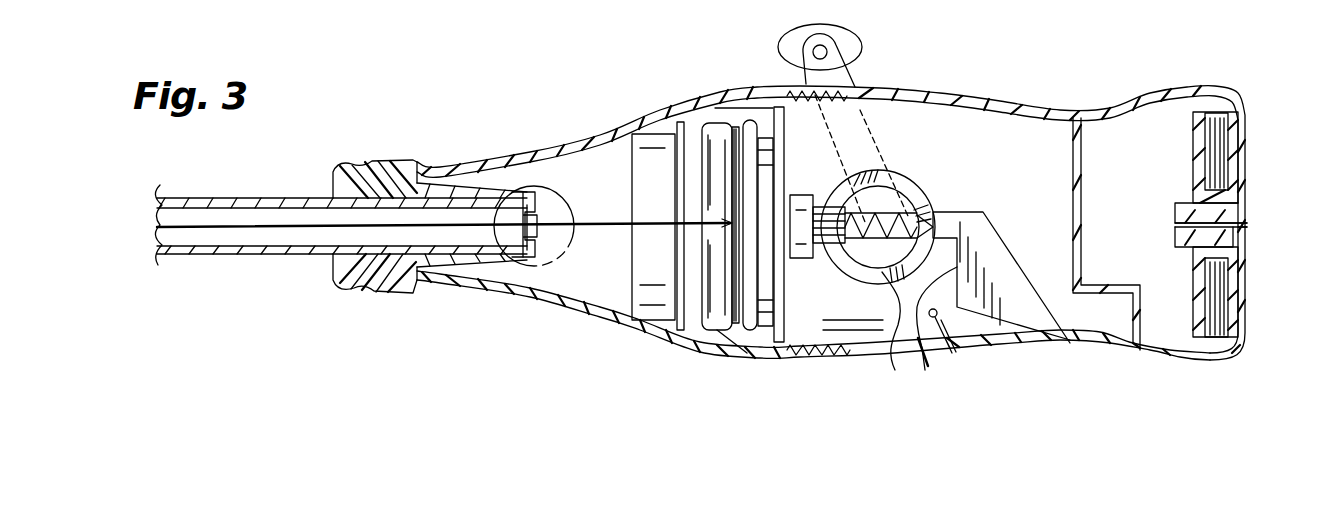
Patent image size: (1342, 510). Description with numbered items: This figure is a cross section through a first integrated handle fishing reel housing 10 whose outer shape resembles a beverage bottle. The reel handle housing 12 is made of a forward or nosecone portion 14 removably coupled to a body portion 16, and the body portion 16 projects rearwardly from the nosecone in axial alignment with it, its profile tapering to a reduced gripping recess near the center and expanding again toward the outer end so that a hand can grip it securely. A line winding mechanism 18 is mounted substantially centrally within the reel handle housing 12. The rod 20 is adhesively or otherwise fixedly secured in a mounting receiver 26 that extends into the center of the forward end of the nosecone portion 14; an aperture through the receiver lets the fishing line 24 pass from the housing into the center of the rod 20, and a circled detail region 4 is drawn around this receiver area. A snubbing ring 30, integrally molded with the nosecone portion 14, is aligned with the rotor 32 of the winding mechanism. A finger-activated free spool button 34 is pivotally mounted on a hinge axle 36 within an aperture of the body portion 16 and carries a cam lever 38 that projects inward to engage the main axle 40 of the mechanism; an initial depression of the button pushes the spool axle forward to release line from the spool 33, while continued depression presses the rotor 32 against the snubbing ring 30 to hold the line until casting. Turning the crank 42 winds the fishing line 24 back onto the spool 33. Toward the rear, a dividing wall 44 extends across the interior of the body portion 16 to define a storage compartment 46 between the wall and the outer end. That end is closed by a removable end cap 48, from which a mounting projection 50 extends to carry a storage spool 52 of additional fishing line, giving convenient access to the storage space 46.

The integrated handle fishing reel housing 10 is at (368, 132).
The reel handle housing 12 is at (381, 297).
The forward or nosecone portion 14 is at (534, 292).
The connection point 4 is at (508, 258).
The body portion 16 is at (983, 95).
The line winding mechanism 18 is at (706, 125).
The rod 20 is at (311, 262).
The fishing line 24 is at (200, 238).
The mounting receiver 26 is at (505, 192).
The snubbing ring 30 is at (660, 330).
The rotor 32 is at (740, 344).
The spool 33 is at (800, 346).
The finger-activated free spool button 34 is at (1003, 346).
The hinge axle 36 is at (952, 320).
The cam lever 38 is at (925, 350).
The main axle 40 is at (878, 262).
The crank 42 is at (860, 75).
The dividing wall 44 is at (1085, 137).
The storage compartment 46 is at (1122, 160).
The end cap 48 is at (1255, 222).
The mounting projection 50 is at (1173, 232).
The storage spool 52 is at (1196, 312).